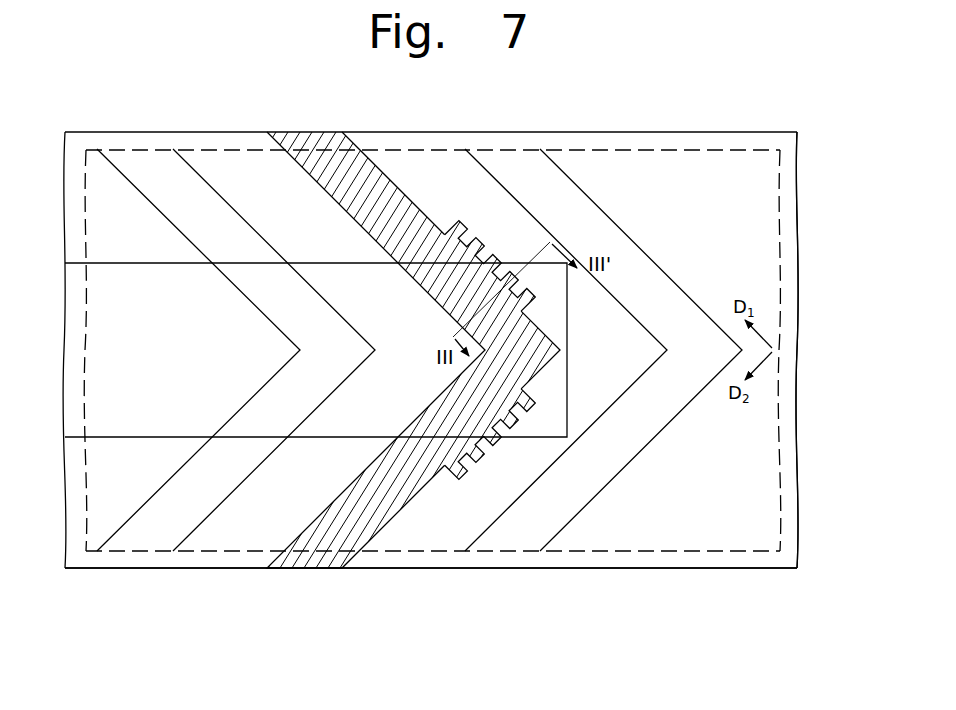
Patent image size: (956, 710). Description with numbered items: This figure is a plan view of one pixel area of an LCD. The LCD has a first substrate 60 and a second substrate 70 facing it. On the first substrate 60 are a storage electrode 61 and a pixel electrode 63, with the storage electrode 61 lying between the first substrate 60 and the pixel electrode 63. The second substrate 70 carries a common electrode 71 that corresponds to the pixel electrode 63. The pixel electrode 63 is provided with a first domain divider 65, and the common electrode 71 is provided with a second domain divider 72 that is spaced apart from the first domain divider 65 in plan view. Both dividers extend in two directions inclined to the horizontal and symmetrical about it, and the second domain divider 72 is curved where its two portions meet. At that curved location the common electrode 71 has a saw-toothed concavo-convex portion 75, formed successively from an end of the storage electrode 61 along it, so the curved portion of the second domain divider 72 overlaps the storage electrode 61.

The first substrate 60 is at (712, 551).
The storage electrode 61 is at (325, 262).
The pixel electrode 63 is at (765, 425).
The first domain divider 65 is at (153, 533).
The second substrate 70 is at (797, 568).
The common electrode 71 is at (615, 558).
The second domain divider 72 is at (312, 558).
The concavo-convex portion 75 is at (490, 249).